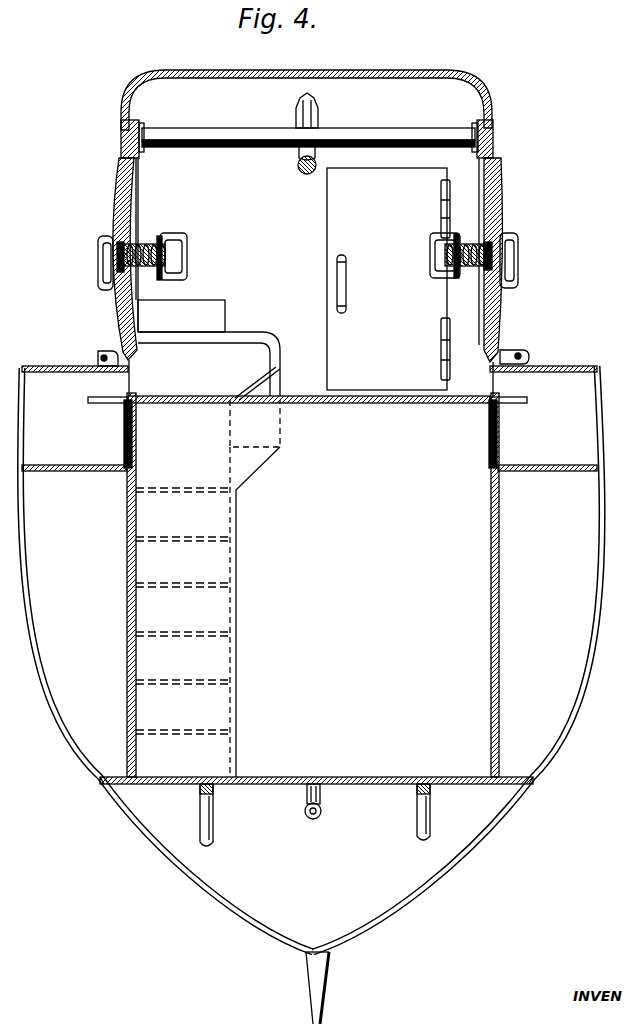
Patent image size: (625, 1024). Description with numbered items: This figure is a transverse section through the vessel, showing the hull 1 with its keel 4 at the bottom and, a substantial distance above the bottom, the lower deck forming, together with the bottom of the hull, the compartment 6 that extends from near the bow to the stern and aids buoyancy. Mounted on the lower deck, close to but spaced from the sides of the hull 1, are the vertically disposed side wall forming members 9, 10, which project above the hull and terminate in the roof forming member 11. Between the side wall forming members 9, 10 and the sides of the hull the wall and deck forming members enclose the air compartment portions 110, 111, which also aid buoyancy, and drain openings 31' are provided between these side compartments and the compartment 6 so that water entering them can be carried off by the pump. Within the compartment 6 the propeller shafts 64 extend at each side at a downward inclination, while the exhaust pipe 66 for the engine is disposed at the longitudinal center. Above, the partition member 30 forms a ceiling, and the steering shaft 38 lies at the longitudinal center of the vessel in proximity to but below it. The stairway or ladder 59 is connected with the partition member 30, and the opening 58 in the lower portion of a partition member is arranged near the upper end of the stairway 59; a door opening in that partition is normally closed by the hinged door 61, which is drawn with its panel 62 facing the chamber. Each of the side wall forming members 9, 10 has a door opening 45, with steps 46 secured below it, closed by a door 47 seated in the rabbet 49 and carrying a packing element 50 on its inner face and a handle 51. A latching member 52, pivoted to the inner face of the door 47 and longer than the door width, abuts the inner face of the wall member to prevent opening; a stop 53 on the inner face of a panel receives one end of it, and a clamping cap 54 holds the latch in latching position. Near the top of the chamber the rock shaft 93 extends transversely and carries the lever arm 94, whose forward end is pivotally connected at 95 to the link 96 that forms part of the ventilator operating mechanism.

The hull 1 is at (583, 688).
The keel 4 is at (325, 969).
The compartment 6 is at (316, 822).
The side wall forming member 9 is at (126, 606).
The side wall forming member 10 is at (498, 606).
The roof forming member 11 is at (366, 70).
The partition member 30 is at (350, 403).
The drain openings 31' is at (306, 797).
The steering shaft 38 is at (122, 432).
The door opening 45 is at (140, 183).
The steps 46 is at (108, 397).
The door 47 is at (116, 193).
The rabbet 49 is at (121, 148).
The packing element 50 is at (139, 173).
The handle 51 is at (97, 252).
The latching member 52 is at (143, 242).
The stop 53 is at (181, 316).
The clamping cap 54 is at (187, 252).
The opening 58 is at (200, 318).
The stairway or ladder 59 is at (220, 552).
The hinged door 61 is at (328, 211).
The door panel 62 is at (370, 287).
The propeller shaft 64 is at (200, 790).
The exhaust pipe 66 is at (322, 812).
The rock shaft 93 is at (243, 128).
The lever arm 94 is at (318, 124).
The pivot 95 is at (317, 165).
The link 96 is at (298, 163).
The air compartment 110 is at (74, 497).
The air compartment 111 is at (547, 497).